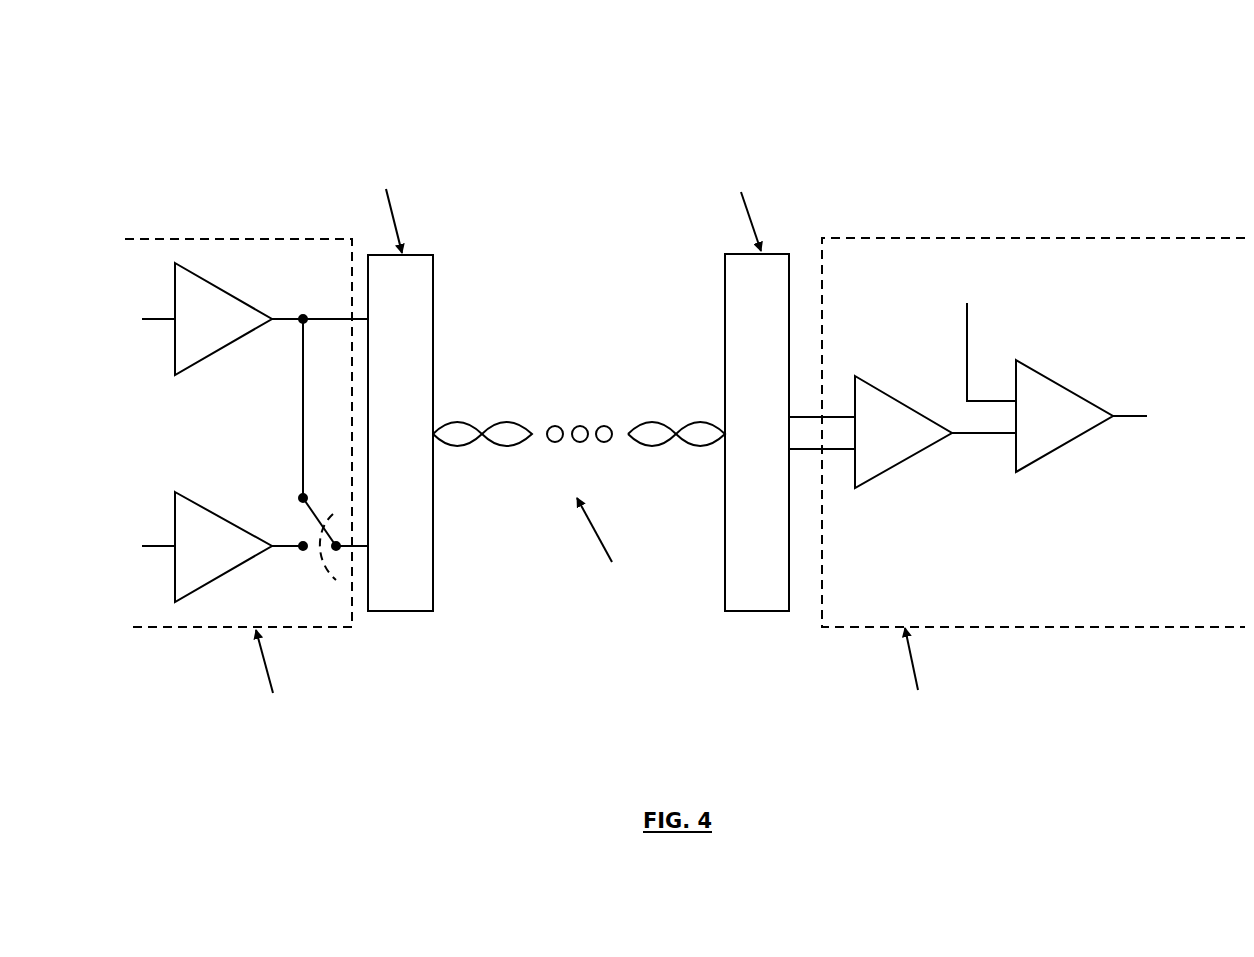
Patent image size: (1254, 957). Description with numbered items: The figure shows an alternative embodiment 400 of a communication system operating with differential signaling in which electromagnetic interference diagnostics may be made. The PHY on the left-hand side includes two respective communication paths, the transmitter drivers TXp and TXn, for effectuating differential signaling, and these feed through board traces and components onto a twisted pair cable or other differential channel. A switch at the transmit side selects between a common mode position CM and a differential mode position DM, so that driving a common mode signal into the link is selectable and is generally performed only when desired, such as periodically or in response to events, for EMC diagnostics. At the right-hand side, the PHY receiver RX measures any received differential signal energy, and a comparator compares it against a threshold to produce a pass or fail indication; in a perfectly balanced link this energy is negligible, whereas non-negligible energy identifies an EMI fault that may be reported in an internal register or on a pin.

The alternative embodiment of communication system 400 is at (1212, 54).
The element TXp is at (207, 319).
The element TXn is at (207, 547).
The common mode CM is at (281, 410).
The differential mode DM is at (289, 557).
The element RX is at (903, 432).
The element comparator is at (1050, 452).